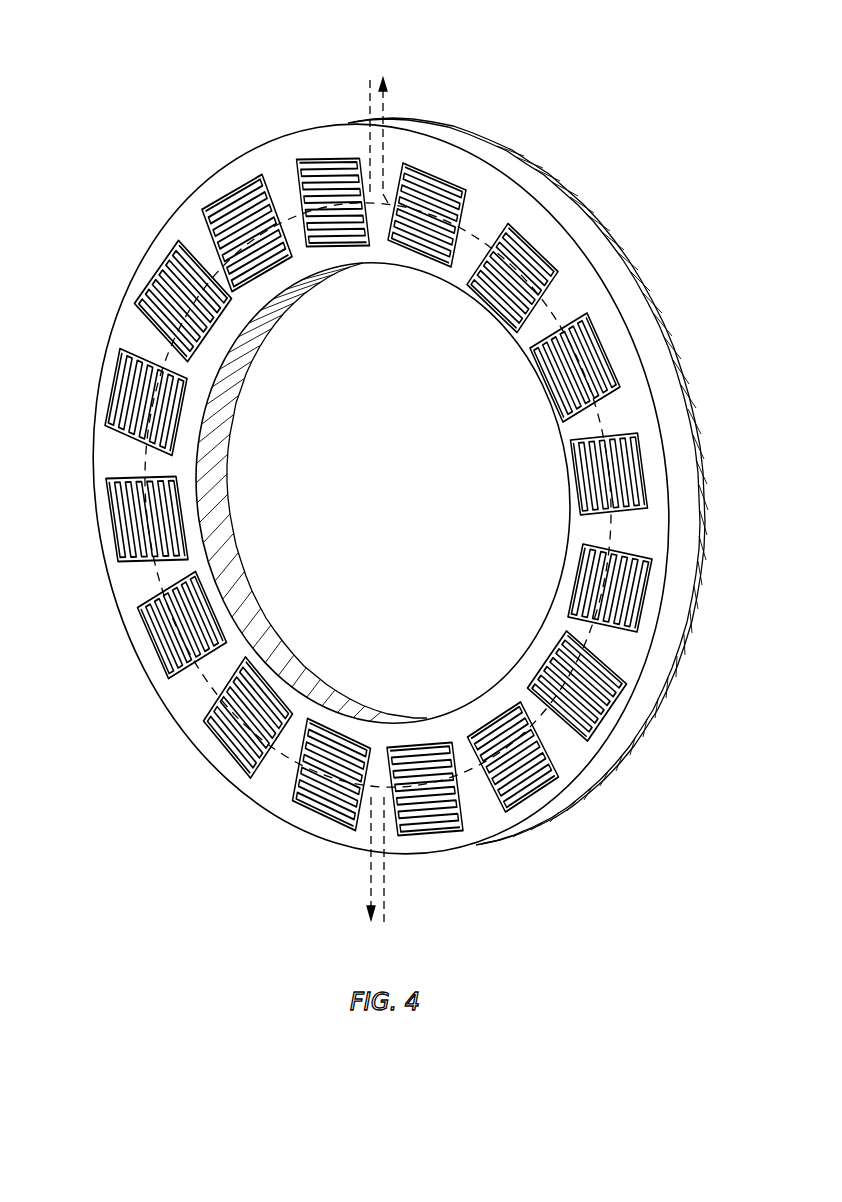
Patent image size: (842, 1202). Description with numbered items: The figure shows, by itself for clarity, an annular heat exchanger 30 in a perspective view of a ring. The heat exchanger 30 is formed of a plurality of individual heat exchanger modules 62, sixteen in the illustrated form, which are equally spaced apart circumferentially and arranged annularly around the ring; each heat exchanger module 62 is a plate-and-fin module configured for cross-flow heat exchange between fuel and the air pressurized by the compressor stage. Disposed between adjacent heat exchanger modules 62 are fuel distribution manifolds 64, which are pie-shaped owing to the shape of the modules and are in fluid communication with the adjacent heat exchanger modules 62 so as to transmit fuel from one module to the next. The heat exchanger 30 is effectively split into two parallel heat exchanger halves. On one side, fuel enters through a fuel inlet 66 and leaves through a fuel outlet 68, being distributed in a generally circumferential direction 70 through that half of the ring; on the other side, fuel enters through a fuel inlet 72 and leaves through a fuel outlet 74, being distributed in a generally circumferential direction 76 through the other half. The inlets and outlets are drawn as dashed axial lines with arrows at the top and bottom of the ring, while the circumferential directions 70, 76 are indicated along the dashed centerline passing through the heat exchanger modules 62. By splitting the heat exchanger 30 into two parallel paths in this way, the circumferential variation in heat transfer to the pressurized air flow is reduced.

The heat exchanger 30 is at (128, 44).
The heat exchanger module 62 is at (532, 248).
The fuel distribution manifold 64 is at (565, 302).
The fuel inlet 66 is at (369, 115).
The fuel outlet 68 is at (370, 874).
The circumferential direction 70 is at (152, 568).
The fuel inlet 72 is at (387, 883).
The fuel outlet 74 is at (385, 115).
The circumferential direction 76 is at (648, 420).